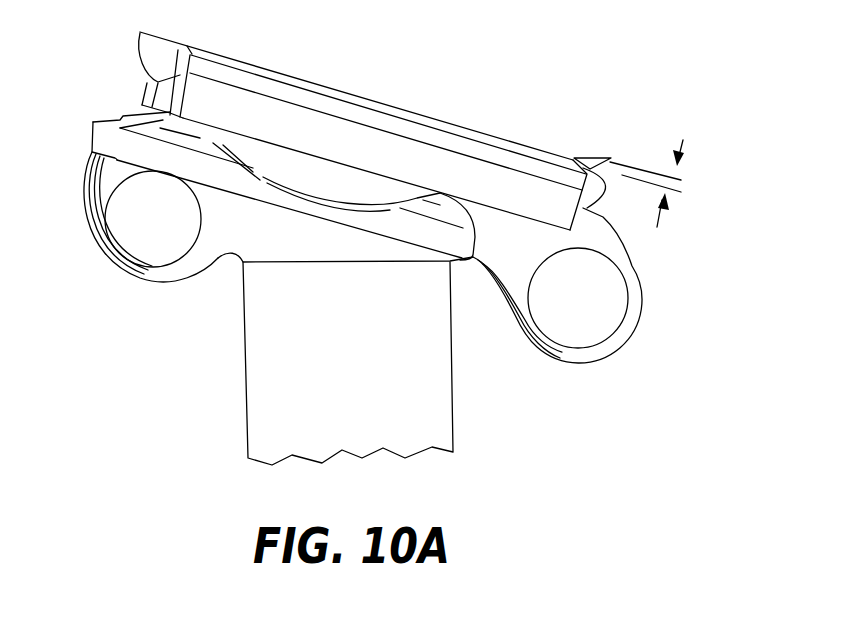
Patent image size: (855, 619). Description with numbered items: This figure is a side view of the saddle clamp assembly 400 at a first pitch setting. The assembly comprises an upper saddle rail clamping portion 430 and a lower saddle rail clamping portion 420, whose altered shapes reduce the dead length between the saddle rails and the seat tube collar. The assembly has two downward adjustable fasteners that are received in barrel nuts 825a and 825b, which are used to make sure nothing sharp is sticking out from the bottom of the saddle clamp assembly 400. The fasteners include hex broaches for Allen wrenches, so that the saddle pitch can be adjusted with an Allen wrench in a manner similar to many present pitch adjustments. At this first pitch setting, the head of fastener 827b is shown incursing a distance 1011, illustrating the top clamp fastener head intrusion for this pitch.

The saddle clamp assembly 400 is at (440, 38).
The upper saddle rail clamping portion 430 is at (423, 113).
The fastener 827b is at (600, 157).
The distance 1011 is at (661, 223).
The lower saddle rail clamping portion 420 is at (263, 177).
The barrel nut 825a is at (143, 248).
The barrel nut 825b is at (600, 320).